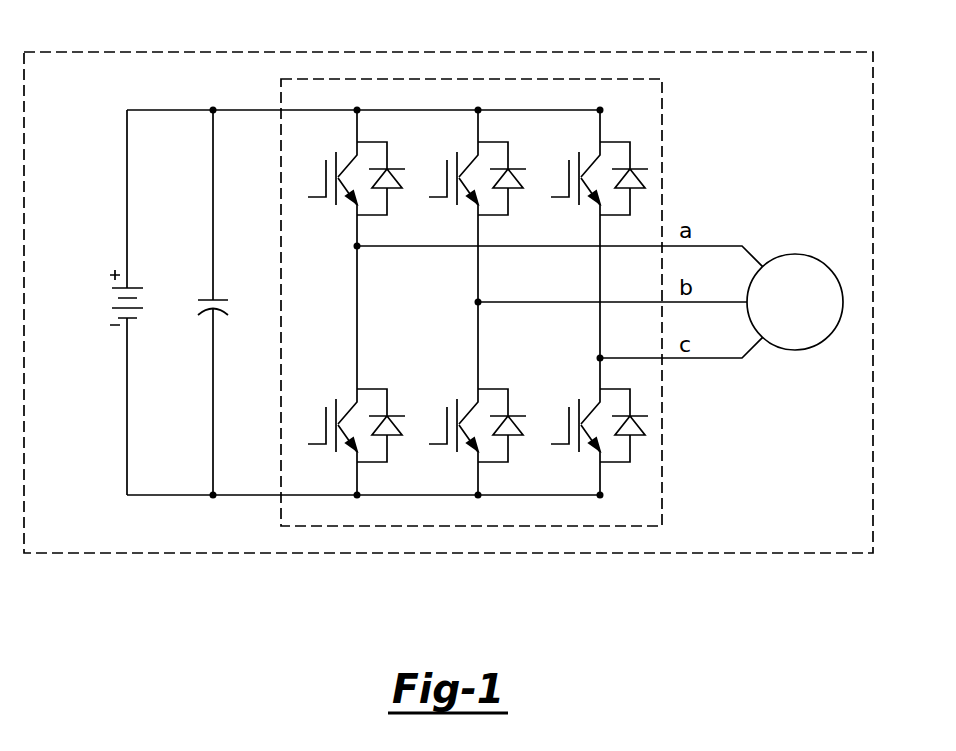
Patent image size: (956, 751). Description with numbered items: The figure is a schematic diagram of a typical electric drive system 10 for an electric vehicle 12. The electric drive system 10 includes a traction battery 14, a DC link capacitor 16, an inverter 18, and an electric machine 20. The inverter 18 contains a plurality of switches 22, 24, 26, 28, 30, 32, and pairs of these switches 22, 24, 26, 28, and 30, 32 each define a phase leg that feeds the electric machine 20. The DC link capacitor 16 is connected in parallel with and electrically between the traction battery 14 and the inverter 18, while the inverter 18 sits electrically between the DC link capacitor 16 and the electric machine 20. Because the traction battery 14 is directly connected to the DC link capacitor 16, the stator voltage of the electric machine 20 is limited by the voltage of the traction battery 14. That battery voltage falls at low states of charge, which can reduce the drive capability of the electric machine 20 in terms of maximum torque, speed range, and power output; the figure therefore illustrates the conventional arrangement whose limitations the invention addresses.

The electric drive system 10 is at (745, 143).
The electric vehicle 12 is at (785, 50).
The traction battery 14 is at (130, 287).
The DC link capacitor 16 is at (217, 300).
The inverter 18 is at (663, 100).
The electric machine 20 is at (797, 255).
The switch 22 is at (387, 205).
The switch 24 is at (372, 389).
The switch 26 is at (508, 205).
The switch 28 is at (493, 389).
The switch 30 is at (632, 202).
The switch 32 is at (632, 448).